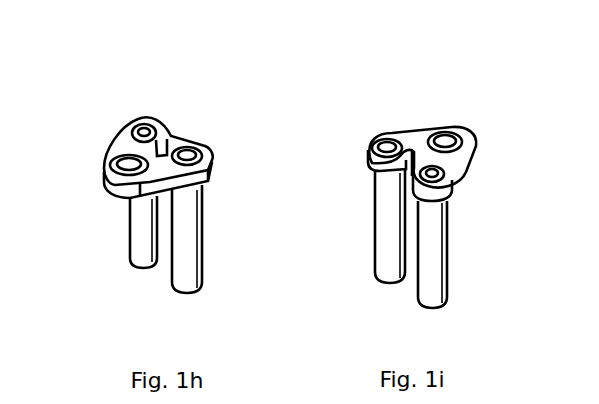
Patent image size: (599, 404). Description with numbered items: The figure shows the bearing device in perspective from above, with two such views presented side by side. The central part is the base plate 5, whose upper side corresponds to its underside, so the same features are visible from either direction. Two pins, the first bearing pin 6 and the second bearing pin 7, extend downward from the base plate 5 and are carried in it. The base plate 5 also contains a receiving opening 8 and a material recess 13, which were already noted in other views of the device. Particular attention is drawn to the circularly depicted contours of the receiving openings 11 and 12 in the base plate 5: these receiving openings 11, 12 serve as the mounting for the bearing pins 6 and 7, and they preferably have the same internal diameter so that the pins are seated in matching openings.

In FIG. 1h, the base plate 5 is at (113, 120).
In FIG. 1i, the base plate 5 is at (405, 115).
In FIG. 1h, the first bearing pin 6 is at (214, 250).
In FIG. 1i, the first bearing pin 6 is at (361, 212).
In FIG. 1h, the second bearing pin 7 is at (118, 228).
In FIG. 1i, the second bearing pin 7 is at (460, 296).
In FIG. 1h, the receiving opening 8 is at (96, 158).
In FIG. 1i, the receiving opening 8 is at (460, 114).
In FIG. 1h, the receiving opening 11 is at (219, 152).
In FIG. 1i, the receiving opening 11 is at (365, 125).
In FIG. 1h, the receiving opening 12 is at (152, 104).
In FIG. 1i, the receiving opening 12 is at (470, 184).
In FIG. 1h, the material recess 13 is at (183, 132).